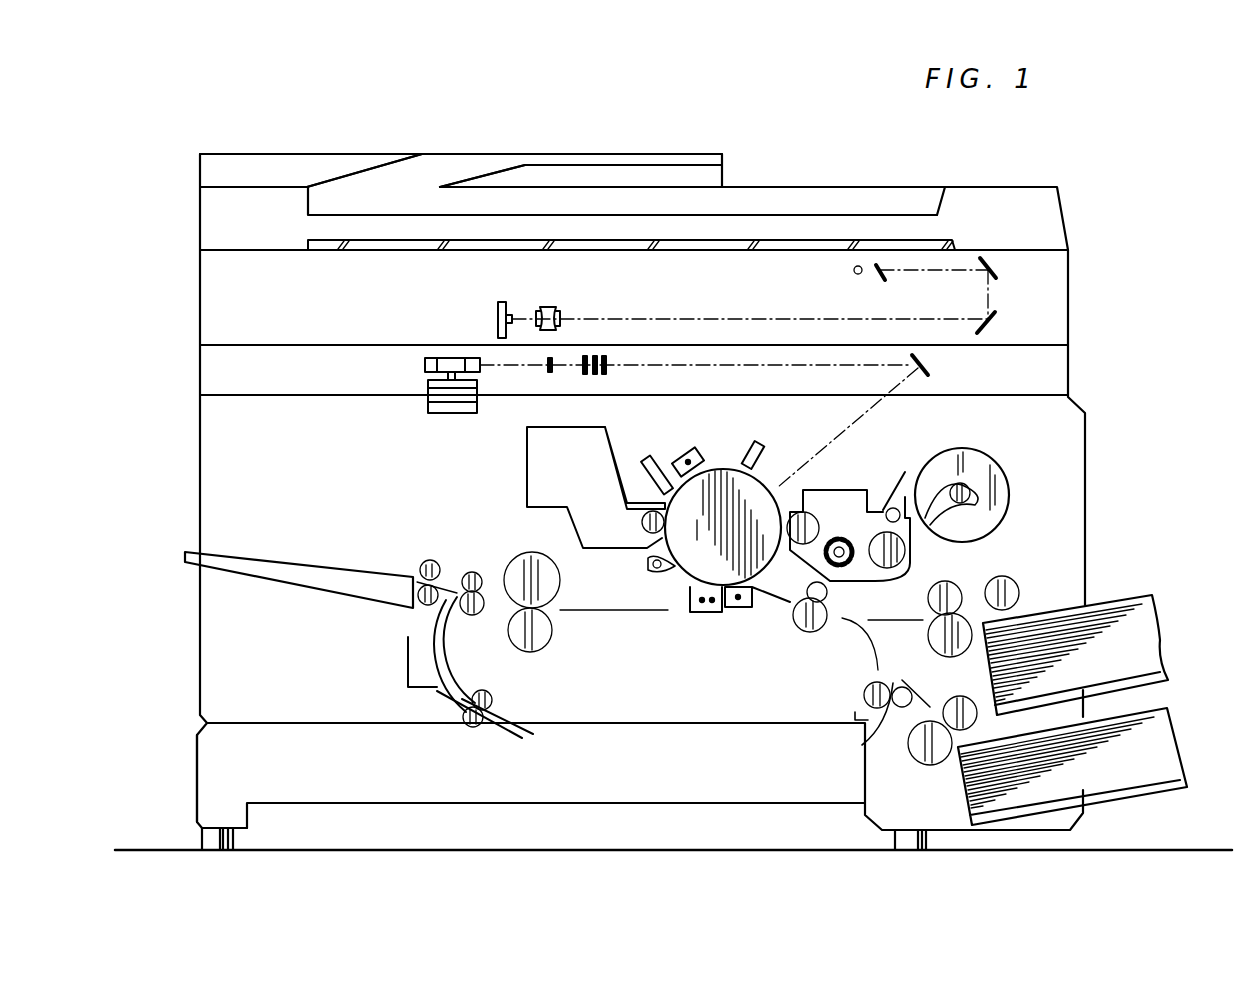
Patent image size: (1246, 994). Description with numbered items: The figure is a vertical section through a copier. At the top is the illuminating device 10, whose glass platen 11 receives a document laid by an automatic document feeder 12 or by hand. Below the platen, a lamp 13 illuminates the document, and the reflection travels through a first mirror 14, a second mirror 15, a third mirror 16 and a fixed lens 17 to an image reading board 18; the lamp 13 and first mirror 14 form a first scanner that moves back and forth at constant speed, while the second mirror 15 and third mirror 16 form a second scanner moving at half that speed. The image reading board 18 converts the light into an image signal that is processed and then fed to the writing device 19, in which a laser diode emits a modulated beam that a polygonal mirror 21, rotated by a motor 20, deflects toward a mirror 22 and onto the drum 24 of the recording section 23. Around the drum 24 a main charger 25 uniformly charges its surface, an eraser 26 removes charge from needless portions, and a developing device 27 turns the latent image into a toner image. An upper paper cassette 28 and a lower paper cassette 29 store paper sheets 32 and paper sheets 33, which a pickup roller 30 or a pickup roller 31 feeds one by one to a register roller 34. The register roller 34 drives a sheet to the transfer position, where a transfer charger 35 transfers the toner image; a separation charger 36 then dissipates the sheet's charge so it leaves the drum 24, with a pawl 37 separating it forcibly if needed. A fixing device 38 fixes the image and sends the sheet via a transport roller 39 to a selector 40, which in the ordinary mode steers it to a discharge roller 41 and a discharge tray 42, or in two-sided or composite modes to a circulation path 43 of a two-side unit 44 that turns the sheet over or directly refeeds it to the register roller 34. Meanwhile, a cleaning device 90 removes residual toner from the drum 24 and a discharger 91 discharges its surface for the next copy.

The illuminating device 10 is at (798, 299).
The glass platen 11 is at (377, 251).
The automatic document feeder 12 is at (370, 150).
The lamp 13 is at (842, 268).
The first mirror 14 is at (877, 282).
The second mirror 15 is at (995, 270).
The third mirror 16 is at (1040, 291).
The lens 17 is at (552, 306).
The image reading board 18 is at (498, 312).
The writing device 19 is at (753, 416).
The motor 20 is at (428, 408).
The polygonal mirror 21 is at (425, 363).
The mirror 22 is at (928, 362).
The recording section 23 is at (1094, 463).
The drum 24 is at (728, 468).
The main charger 25 is at (683, 452).
The eraser 26 is at (760, 448).
The developing device 27 is at (855, 490).
The upper paper cassette 28 is at (1150, 690).
The lower paper cassette 29 is at (1150, 800).
The pickup roller 30 is at (957, 582).
The pickup roller 31 is at (912, 765).
The paper sheets 32 is at (1120, 638).
The paper sheets 33 is at (1140, 750).
The register roller 34 is at (815, 632).
The transfer charger 35 is at (740, 612).
The separation charger 36 is at (705, 615).
The pawl 37 is at (660, 577).
The fixing device 38 is at (548, 650).
The transport roller 39 is at (480, 592).
The selector 40 is at (465, 574).
The discharge roller 41 is at (425, 561).
The discharge tray 42 is at (270, 562).
The circulation path 43 is at (448, 651).
The two-side unit 44 is at (217, 782).
The cleaning device 90 is at (527, 447).
The discharger 91 is at (652, 459).